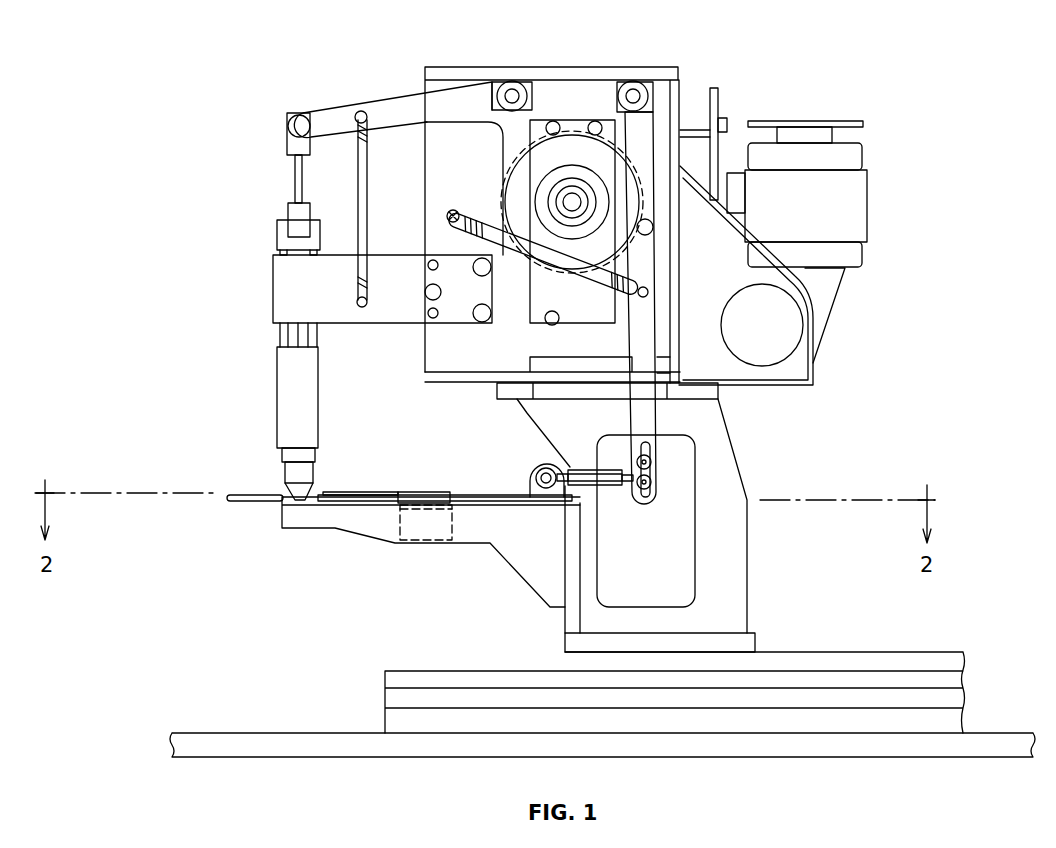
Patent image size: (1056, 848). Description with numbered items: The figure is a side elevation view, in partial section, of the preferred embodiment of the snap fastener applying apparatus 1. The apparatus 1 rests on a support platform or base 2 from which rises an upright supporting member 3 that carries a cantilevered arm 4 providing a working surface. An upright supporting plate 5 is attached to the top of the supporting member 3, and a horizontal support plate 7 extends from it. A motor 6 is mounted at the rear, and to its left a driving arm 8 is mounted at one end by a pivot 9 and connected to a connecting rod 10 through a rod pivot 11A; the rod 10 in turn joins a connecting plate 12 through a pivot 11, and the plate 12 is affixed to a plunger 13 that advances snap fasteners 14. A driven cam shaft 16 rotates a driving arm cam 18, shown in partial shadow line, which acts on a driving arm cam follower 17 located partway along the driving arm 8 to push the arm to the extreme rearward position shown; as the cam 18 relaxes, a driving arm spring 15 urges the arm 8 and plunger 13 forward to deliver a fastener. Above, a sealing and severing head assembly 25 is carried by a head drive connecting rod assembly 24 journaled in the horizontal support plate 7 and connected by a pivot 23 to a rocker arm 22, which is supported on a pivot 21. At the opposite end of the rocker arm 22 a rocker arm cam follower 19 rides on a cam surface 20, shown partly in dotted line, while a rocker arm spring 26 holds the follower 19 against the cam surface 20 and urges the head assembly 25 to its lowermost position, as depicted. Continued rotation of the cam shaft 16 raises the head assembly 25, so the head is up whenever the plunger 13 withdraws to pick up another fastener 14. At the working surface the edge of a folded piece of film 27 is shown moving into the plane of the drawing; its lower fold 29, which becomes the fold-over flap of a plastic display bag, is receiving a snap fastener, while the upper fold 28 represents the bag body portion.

The apparatus 1 is at (933, 232).
The support platform or base 2 is at (862, 650).
The upright supporting member 3 is at (745, 578).
The arm 4 is at (470, 543).
The upright supporting plate 5 is at (425, 347).
The motor 6 is at (868, 183).
The horizontal support plate 7 is at (335, 325).
The driving arm 8 is at (660, 417).
The pivot 9 is at (635, 94).
The connecting rod 10 is at (585, 463).
The pivot 11 is at (533, 471).
The rod pivot 11A is at (652, 482).
The connecting plate 12 is at (532, 490).
The plunger 13 is at (450, 470).
The snap fasteners 14 is at (413, 493).
The driving arm spring 15 is at (473, 218).
The cam shaft 16 is at (572, 202).
The driving arm cam follower 17 is at (653, 223).
The driving arm cam 18 is at (633, 197).
The rocker arm cam follower 19 is at (505, 200).
The cam surface 20 is at (510, 167).
The pivot 21 is at (518, 81).
The rocker arm 22 is at (343, 105).
The pivot 23 is at (288, 120).
The head drive connecting rod assembly means 24 is at (297, 174).
The sealing and severing head assembly 25 is at (277, 403).
The rocker arm spring 26 is at (367, 181).
The folded piece of film 27 is at (212, 517).
The upper fold 28 is at (278, 498).
The lower fold 29 is at (256, 502).